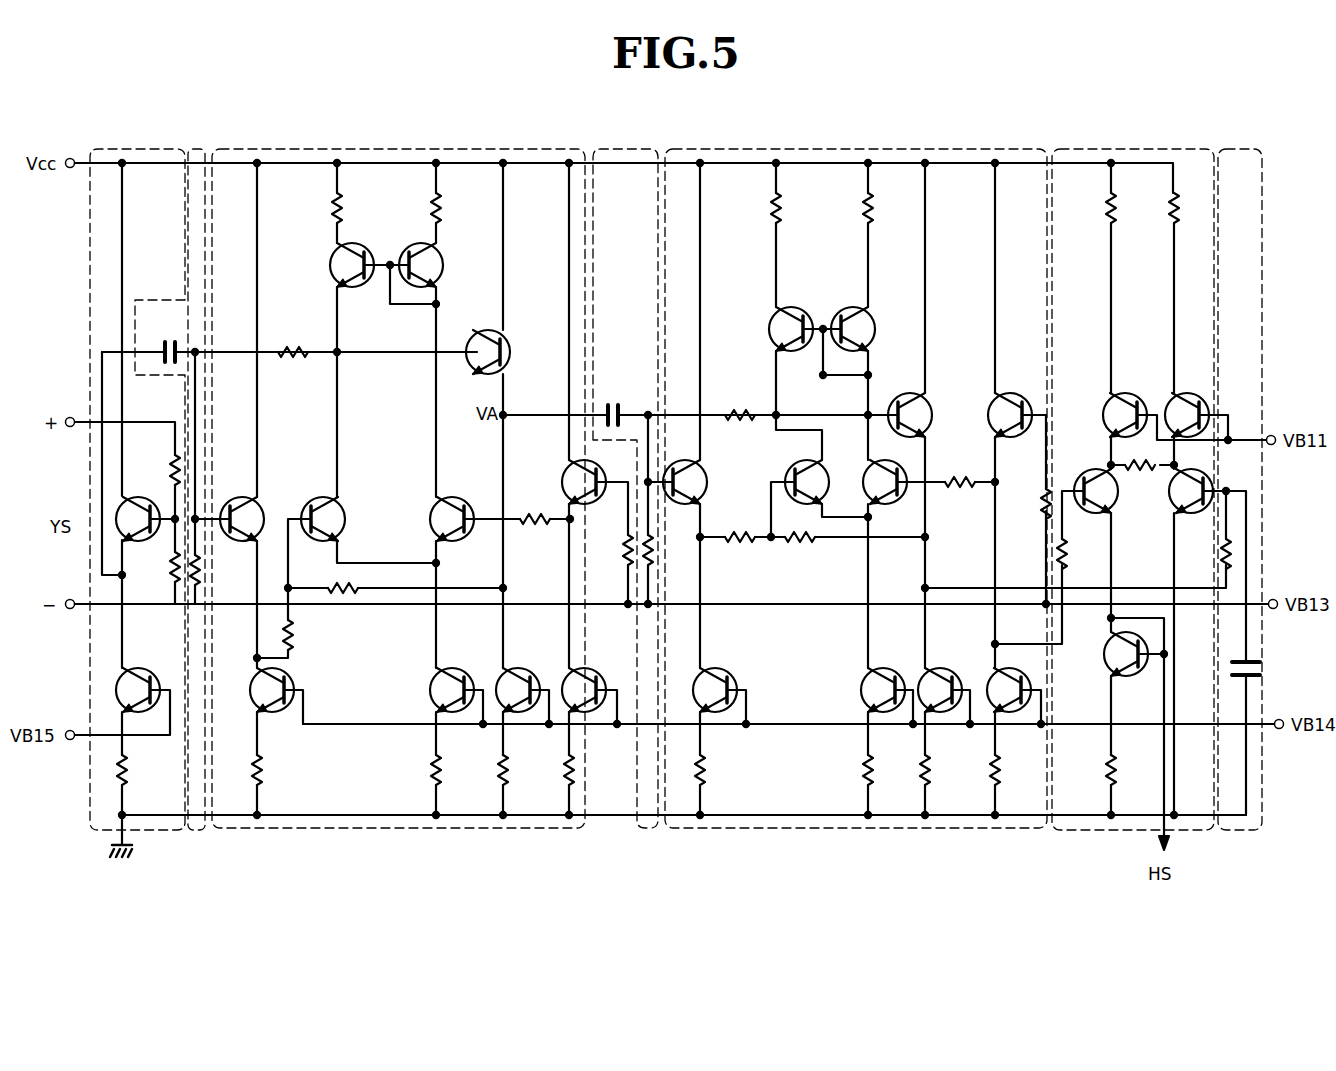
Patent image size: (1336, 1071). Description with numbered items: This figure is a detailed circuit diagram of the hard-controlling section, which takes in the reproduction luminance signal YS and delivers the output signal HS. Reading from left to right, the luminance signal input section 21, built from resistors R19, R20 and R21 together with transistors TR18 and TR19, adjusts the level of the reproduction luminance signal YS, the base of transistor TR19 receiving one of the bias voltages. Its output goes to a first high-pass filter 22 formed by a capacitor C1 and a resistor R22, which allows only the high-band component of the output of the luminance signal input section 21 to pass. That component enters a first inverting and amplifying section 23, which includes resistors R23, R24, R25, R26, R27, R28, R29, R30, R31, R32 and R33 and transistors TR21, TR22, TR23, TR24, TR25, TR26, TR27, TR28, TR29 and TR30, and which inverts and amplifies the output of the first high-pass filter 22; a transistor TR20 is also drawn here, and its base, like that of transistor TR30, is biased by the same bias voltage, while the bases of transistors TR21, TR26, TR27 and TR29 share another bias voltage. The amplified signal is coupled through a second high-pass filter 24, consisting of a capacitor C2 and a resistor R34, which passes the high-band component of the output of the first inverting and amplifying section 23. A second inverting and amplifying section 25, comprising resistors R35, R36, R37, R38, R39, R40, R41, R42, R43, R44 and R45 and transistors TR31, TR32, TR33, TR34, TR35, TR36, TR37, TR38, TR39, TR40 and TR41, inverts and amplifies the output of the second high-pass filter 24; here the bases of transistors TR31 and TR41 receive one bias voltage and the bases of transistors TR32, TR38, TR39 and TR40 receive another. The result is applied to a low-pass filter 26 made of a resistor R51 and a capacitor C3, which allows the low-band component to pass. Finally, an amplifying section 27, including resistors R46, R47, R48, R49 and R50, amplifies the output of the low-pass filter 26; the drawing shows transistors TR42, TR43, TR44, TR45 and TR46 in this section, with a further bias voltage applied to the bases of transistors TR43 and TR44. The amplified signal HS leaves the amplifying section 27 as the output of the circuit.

The luminance signal input section 21 is at (120, 150).
The first high-pass filter 22 is at (192, 153).
The first inverting and amplifying section 23 is at (345, 150).
The second high-pass filter 24 is at (600, 150).
The second inverting and amplifying section 25 is at (812, 150).
The low-pass filter 26 is at (1220, 150).
The amplifying section 27 is at (1080, 150).
The capacitor C1 is at (158, 341).
The capacitor C2 is at (611, 404).
The capacitor C3 is at (1238, 667).
The resistor R19 is at (160, 469).
The resistor R20 is at (157, 570).
The resistor R21 is at (142, 771).
The resistor R22 is at (218, 571).
The resistor R23 is at (276, 771).
The resistor R24 is at (291, 340).
The resistor R25 is at (307, 635).
The resistor R26 is at (341, 579).
The resistor R27 is at (455, 771).
The resistor R28 is at (522, 771).
The resistor R29 is at (356, 208).
The resistor R30 is at (455, 208).
The resistor R31 is at (534, 507).
The resistor R32 is at (607, 550).
The resistor R33 is at (588, 771).
The resistor R34 is at (663, 550).
The resistor R35 is at (719, 771).
The resistor R36 is at (742, 526).
The resistor R37 is at (796, 526).
The resistor R38 is at (795, 208).
The resistor R39 is at (887, 208).
The resistor R40 is at (740, 404).
The resistor R41 is at (887, 771).
The resistor R42 is at (955, 470).
The resistor R43 is at (944, 771).
The resistor R44 is at (1013, 771).
The resistor R45 is at (1025, 504).
The resistor R46 is at (1081, 554).
The resistor R47 is at (1129, 208).
The resistor R48 is at (1187, 215).
The resistor R49 is at (1138, 455).
The resistor R50 is at (1129, 771).
The resistor R51 is at (1202, 556).
The transistor TR18 is at (144, 509).
The transistor TR19 is at (144, 680).
The transistor TR20 is at (239, 509).
The transistor TR21 is at (293, 681).
The transistor TR22 is at (358, 256).
The transistor TR23 is at (441, 256).
The transistor TR24 is at (322, 509).
The transistor TR25 is at (457, 509).
The transistor TR26 is at (457, 680).
The transistor TR27 is at (524, 680).
The transistor TR28 is at (482, 342).
The transistor TR29 is at (596, 680).
The transistor TR30 is at (559, 473).
The transistor TR31 is at (709, 479).
The transistor TR32 is at (720, 680).
The transistor TR33 is at (770, 329).
The transistor TR34 is at (846, 319).
The transistor TR35 is at (904, 406).
The transistor TR36 is at (800, 471).
The transistor TR37 is at (889, 471).
The transistor TR38 is at (888, 680).
The transistor TR39 is at (945, 680).
The transistor TR40 is at (1014, 680).
The transistor TR41 is at (1016, 404).
The transistor TR42 is at (1085, 481).
The transistor TR43 is at (1129, 404).
The transistor TR44 is at (1193, 404).
The transistor TR45 is at (1128, 666).
The transistor TR46 is at (1194, 481).